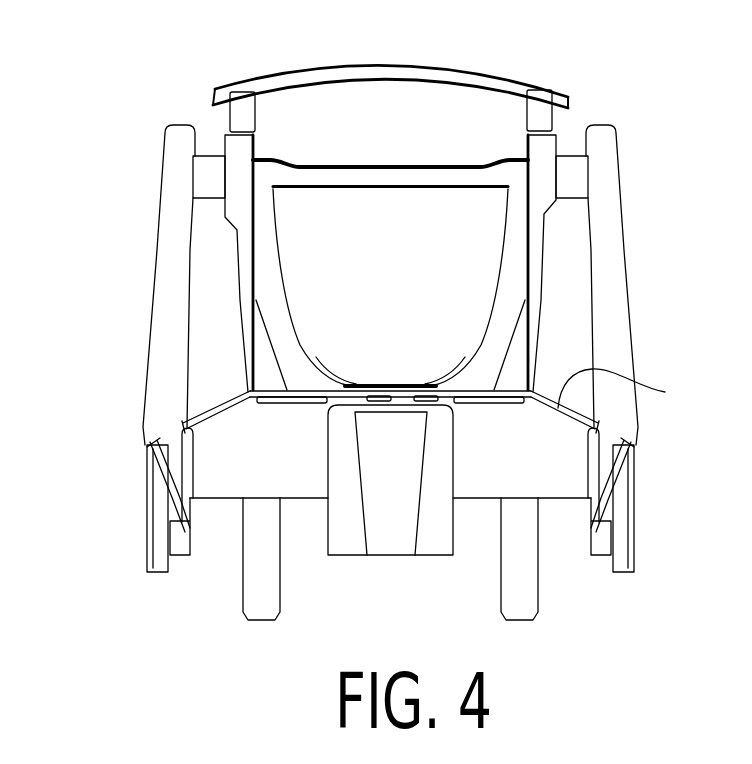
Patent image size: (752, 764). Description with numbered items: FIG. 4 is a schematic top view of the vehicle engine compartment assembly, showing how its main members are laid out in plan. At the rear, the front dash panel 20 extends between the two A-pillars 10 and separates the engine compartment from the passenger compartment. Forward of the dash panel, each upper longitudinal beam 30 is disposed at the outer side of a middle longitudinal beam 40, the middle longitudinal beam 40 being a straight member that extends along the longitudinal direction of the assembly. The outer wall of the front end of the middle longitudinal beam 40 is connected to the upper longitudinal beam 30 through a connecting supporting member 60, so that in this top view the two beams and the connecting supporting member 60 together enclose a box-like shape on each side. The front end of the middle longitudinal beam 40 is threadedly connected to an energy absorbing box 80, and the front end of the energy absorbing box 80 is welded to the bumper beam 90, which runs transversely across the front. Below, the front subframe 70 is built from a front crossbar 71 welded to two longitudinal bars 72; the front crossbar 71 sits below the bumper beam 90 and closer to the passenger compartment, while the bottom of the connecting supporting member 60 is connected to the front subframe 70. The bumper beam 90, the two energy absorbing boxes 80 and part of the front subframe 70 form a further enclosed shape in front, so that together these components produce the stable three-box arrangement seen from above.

The A-pillar 10 is at (157, 535).
The front dash panel 20 is at (665, 392).
The upper longitudinal beam 30 is at (178, 233).
The middle longitudinal beam 40 is at (248, 266).
The connecting supporting member 60 is at (208, 190).
The front subframe 70 is at (439, 140).
The front crossbar 71 is at (339, 175).
The longitudinal bar 72 is at (272, 295).
The energy absorbing box 80 is at (540, 115).
The bumper beam 90 is at (513, 83).